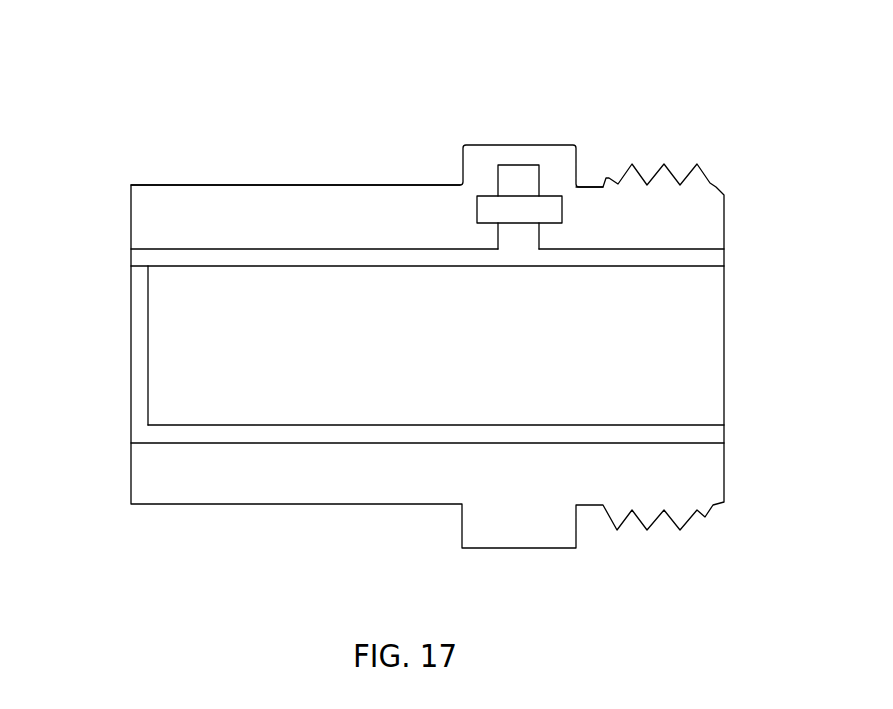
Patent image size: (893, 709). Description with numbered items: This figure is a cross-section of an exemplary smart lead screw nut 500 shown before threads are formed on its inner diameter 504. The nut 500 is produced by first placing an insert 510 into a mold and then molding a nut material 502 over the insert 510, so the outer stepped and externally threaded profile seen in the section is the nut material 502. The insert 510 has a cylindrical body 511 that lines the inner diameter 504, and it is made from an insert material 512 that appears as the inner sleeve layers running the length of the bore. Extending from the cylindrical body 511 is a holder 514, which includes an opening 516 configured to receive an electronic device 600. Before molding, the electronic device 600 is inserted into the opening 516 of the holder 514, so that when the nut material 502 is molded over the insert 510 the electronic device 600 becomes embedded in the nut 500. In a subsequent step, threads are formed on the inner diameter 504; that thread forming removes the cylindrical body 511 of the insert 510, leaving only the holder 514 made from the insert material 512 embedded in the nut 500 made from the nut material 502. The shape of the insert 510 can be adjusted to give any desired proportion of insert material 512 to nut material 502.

The lead screw nut 500 is at (173, 142).
The nut material 502 is at (345, 207).
The inner diameter 504 is at (176, 320).
The insert 510 is at (165, 244).
The cylindrical body 511 is at (699, 255).
The insert material 512 is at (198, 435).
The holder 514 is at (518, 178).
The opening 516 is at (552, 189).
The electronic device 600 is at (522, 212).